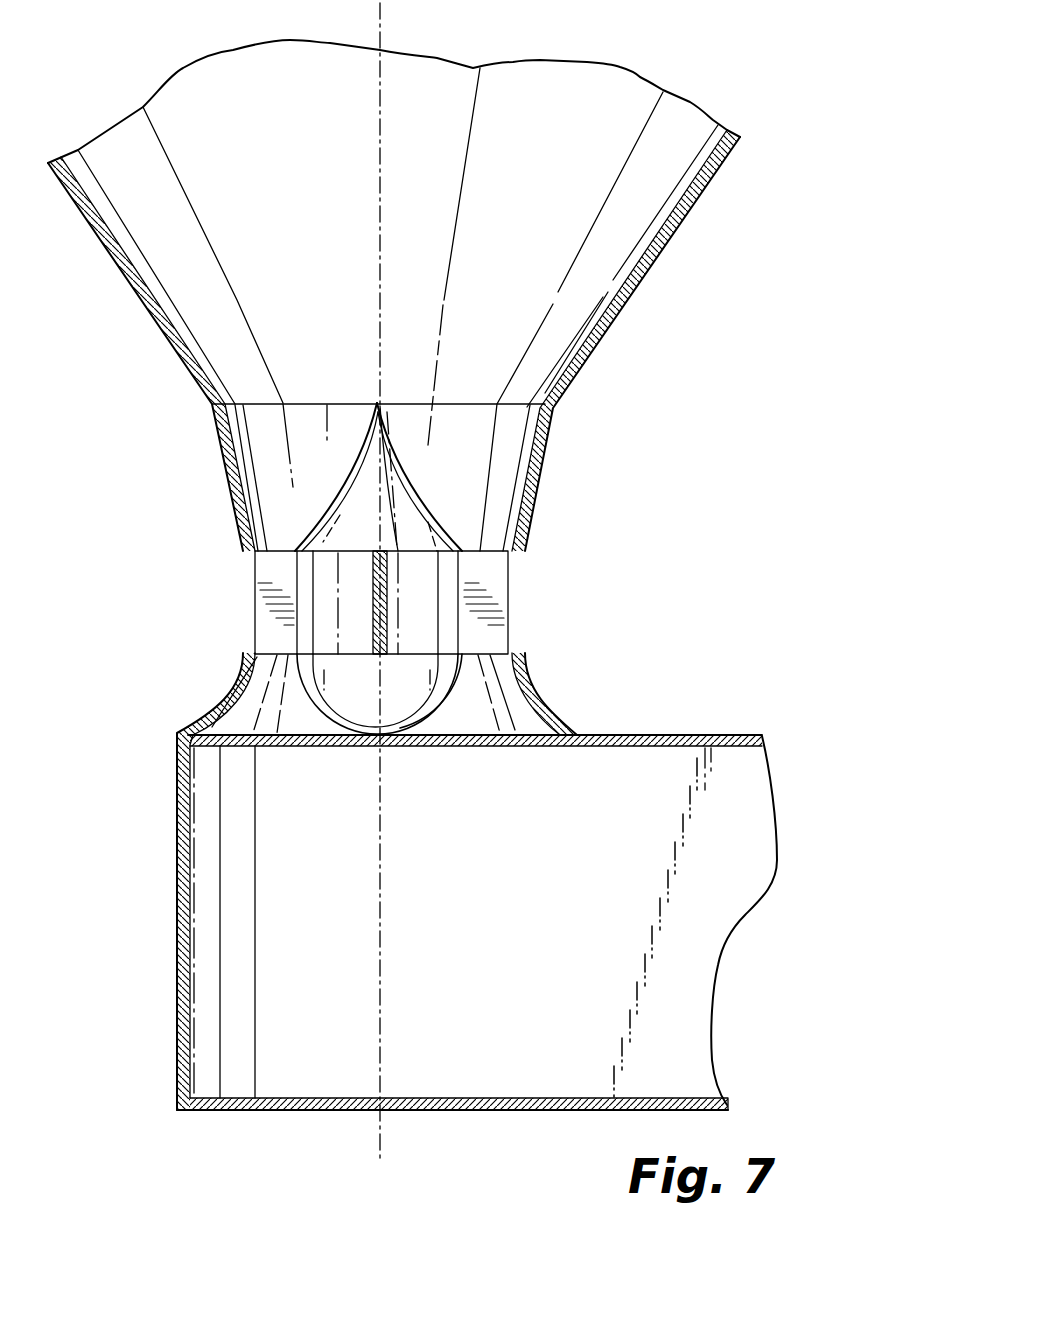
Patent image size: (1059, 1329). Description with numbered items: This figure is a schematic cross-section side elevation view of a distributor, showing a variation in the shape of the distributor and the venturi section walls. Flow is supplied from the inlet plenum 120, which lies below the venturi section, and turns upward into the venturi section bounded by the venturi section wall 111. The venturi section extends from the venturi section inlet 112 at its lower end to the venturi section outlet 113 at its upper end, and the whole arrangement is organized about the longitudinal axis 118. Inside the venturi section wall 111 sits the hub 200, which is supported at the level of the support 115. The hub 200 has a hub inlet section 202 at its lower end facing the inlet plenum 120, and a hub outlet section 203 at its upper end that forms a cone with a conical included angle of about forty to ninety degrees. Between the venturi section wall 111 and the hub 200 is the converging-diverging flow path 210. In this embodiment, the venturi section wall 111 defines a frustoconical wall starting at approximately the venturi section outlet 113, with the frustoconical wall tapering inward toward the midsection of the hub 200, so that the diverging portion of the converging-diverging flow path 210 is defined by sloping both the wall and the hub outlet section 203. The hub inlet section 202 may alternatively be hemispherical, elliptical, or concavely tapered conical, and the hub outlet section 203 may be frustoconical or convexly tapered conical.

The venturi section wall 111 is at (539, 483).
The venturi section inlet 112 is at (177, 733).
The venturi section outlet 113 is at (212, 404).
The support ring 115 is at (497, 577).
The longitudinal axis 118 is at (381, 1152).
The inlet plenum 120 is at (668, 736).
The hub 200 is at (384, 593).
The hub inlet section 202 is at (421, 698).
The hub outlet section 203 is at (342, 496).
The converging-diverging flow path 210 is at (262, 446).